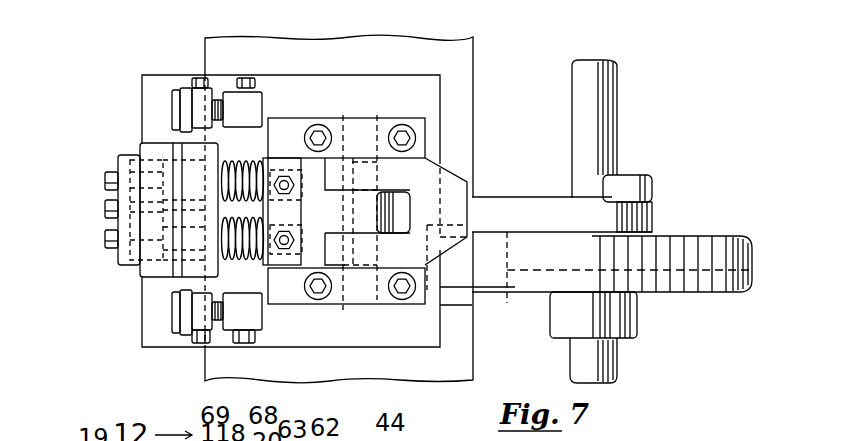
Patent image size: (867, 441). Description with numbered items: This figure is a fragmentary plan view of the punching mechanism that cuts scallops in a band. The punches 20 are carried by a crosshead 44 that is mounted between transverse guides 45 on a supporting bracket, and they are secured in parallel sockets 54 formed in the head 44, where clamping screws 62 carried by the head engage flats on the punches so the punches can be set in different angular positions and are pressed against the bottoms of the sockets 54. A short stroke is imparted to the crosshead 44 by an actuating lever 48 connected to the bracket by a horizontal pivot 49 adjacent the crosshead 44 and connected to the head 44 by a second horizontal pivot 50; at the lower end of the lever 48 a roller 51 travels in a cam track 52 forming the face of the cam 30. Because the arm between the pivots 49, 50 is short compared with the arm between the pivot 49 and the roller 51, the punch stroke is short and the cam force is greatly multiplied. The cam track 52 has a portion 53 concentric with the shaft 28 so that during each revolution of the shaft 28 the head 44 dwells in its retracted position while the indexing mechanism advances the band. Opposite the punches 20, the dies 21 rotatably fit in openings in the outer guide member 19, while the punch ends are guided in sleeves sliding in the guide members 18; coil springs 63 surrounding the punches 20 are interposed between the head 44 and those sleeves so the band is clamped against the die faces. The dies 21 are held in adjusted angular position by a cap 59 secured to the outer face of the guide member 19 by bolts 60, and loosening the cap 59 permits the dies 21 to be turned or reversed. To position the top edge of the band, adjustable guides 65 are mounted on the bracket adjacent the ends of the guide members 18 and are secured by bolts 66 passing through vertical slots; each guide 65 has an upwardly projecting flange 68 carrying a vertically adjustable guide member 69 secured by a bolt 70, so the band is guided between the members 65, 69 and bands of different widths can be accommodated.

The guide member 18 is at (189, 265).
The outer guide member 19 is at (153, 264).
The punch 20 is at (240, 163).
The die 21 is at (160, 258).
The shaft 28 is at (617, 118).
The cam 30 is at (717, 293).
The crosshead 44 is at (310, 167).
The transverse guide 45 is at (420, 136).
The actuating lever 48 is at (515, 203).
The horizontal pivot 49 is at (370, 310).
The horizontal pivot 50 is at (340, 300).
The roller 51 is at (652, 233).
The cam track 52 is at (730, 237).
The concentric portion 53 is at (571, 315).
The socket 54 is at (270, 208).
The cap 59 is at (118, 193).
The bolt 60 is at (107, 176).
The clamping screw 62 is at (290, 184).
The coil spring 63 is at (243, 262).
The adjustable guide 65 is at (225, 108).
The bolt 66 is at (200, 78).
The flange 68 is at (203, 103).
The guide member 69 is at (185, 90).
The bolt 70 is at (250, 110).